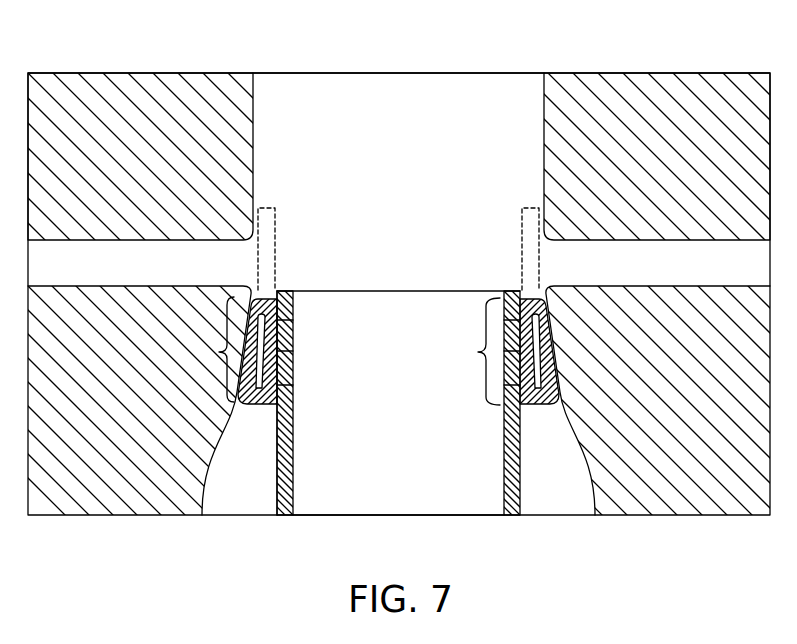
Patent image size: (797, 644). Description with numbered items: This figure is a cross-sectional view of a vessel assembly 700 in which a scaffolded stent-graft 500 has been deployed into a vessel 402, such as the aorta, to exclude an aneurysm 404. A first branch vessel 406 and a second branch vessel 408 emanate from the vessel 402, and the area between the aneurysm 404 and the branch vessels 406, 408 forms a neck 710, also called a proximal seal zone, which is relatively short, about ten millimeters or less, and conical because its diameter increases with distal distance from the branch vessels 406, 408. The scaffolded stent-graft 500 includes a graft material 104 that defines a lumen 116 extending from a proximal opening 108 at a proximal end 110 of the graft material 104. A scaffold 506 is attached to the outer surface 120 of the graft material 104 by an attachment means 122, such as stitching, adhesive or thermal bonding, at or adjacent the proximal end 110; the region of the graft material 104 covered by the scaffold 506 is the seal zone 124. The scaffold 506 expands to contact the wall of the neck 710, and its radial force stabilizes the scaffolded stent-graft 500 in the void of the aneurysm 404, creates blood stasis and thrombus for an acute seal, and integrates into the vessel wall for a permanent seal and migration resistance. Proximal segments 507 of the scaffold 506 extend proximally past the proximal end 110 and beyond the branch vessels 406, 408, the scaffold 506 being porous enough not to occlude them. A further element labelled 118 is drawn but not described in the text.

The vessel assembly 700 is at (100, 62).
The vessel 402 is at (417, 188).
The first branch vessel 406 is at (147, 276).
The second branch vessel 408 is at (683, 275).
The proximal segments 507 is at (266, 208).
The scaffolded stent-graft 500 is at (361, 274).
The proximal opening 108 is at (379, 274).
The proximal end 110 is at (472, 289).
The attachment means 122 is at (287, 349).
The seal zone 124 is at (476, 351).
The neck 710 is at (219, 352).
The scaffold 506 is at (248, 403).
The liner 118 is at (294, 455).
The outer surface 120 is at (277, 484).
The lumen 116 is at (417, 475).
The aneurysm 404 is at (564, 456).
The graft material 104 is at (520, 463).